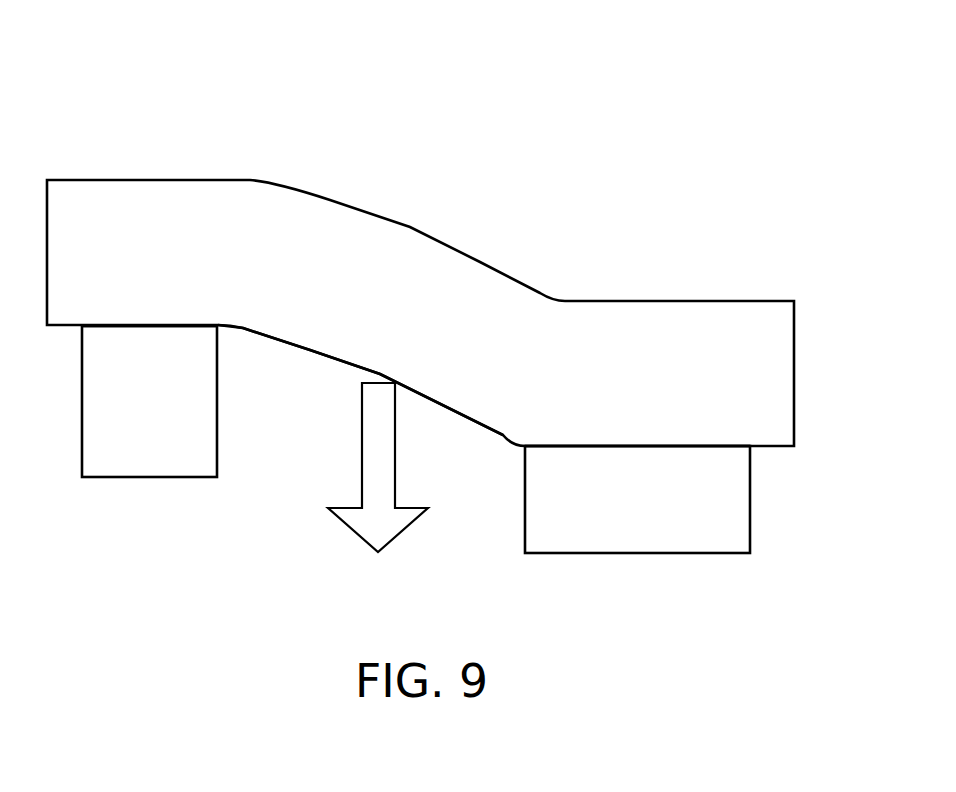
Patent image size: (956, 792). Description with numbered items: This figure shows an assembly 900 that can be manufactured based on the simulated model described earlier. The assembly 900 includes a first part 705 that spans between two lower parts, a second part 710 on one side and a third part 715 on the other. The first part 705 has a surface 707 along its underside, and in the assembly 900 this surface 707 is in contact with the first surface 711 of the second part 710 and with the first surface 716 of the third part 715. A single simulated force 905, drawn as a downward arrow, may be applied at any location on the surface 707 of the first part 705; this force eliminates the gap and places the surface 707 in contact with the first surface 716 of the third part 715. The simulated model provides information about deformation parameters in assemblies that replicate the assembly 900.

The assembly 900 is at (752, 94).
The first part 705 is at (449, 316).
The surface 707 is at (313, 350).
The second part 710 is at (170, 417).
The first surface 711 is at (163, 327).
The third part 715 is at (658, 516).
The first surface 716 is at (624, 447).
The single simulated force 905 is at (362, 445).